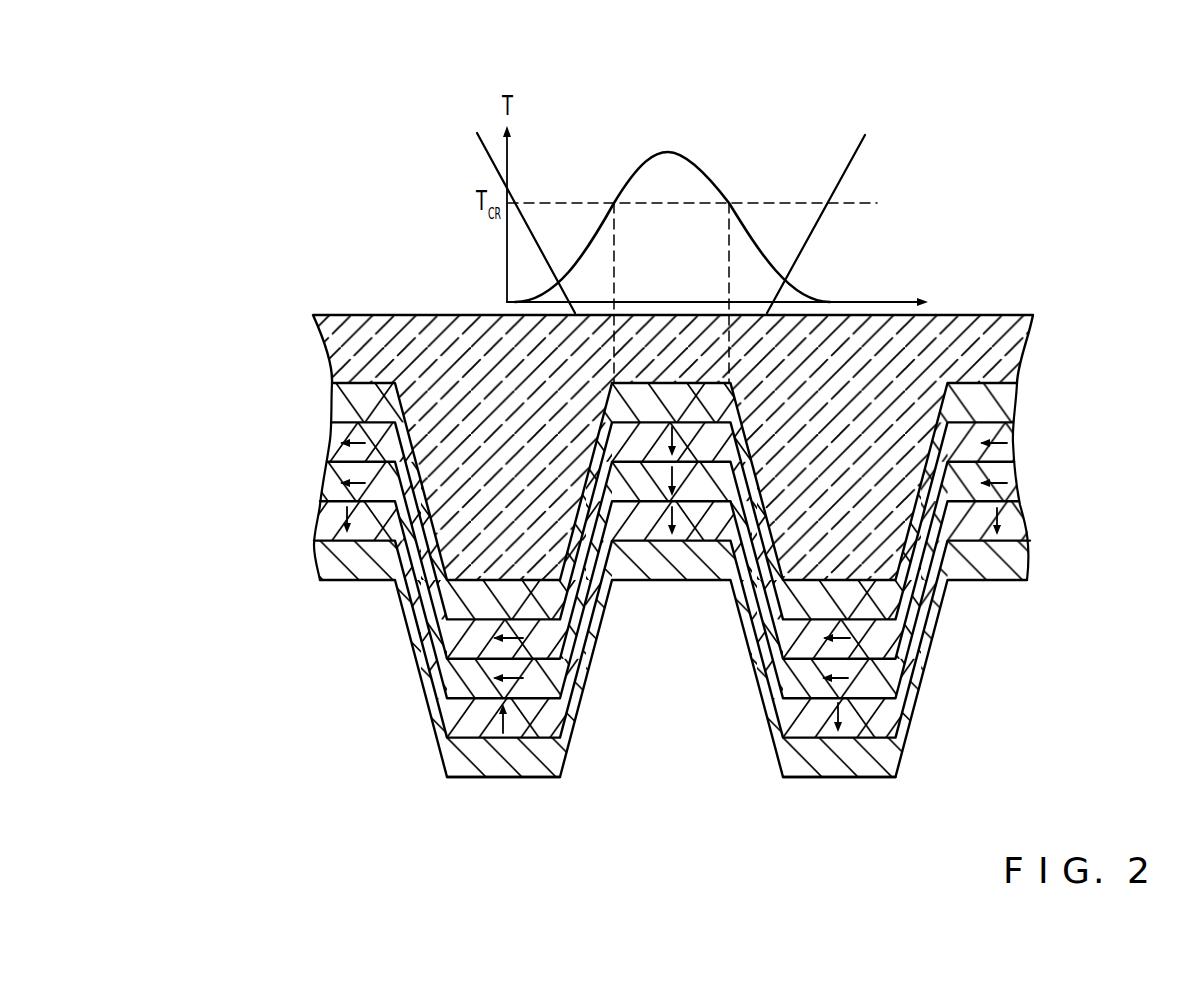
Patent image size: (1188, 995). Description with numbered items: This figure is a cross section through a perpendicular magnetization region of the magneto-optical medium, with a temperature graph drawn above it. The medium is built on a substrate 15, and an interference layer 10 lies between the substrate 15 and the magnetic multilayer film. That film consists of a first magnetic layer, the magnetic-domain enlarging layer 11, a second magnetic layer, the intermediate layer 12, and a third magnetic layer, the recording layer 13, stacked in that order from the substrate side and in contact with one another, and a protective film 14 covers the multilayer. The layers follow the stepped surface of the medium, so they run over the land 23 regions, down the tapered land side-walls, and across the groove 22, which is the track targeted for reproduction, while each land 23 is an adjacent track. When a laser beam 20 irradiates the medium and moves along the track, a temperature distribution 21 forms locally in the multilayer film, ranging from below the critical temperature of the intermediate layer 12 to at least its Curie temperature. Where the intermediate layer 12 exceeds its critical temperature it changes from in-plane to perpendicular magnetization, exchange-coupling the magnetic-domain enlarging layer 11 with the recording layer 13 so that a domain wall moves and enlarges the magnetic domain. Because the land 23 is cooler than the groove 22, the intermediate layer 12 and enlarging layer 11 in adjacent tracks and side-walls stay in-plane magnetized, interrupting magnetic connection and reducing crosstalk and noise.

The interference layer 10 is at (333, 408).
The first magnetic layer (magnetic-domain enlarging layer) 11 is at (333, 452).
The second magnetic layer (intermediate layer) 12 is at (333, 493).
The third magnetic layer (recording layer) 13 is at (325, 530).
The protective film 14 is at (327, 572).
The substrate 15 is at (333, 353).
The laser beam 20 is at (823, 155).
The temperature distribution 21 is at (667, 152).
The groove 22 is at (672, 605).
The land 23 is at (503, 788).